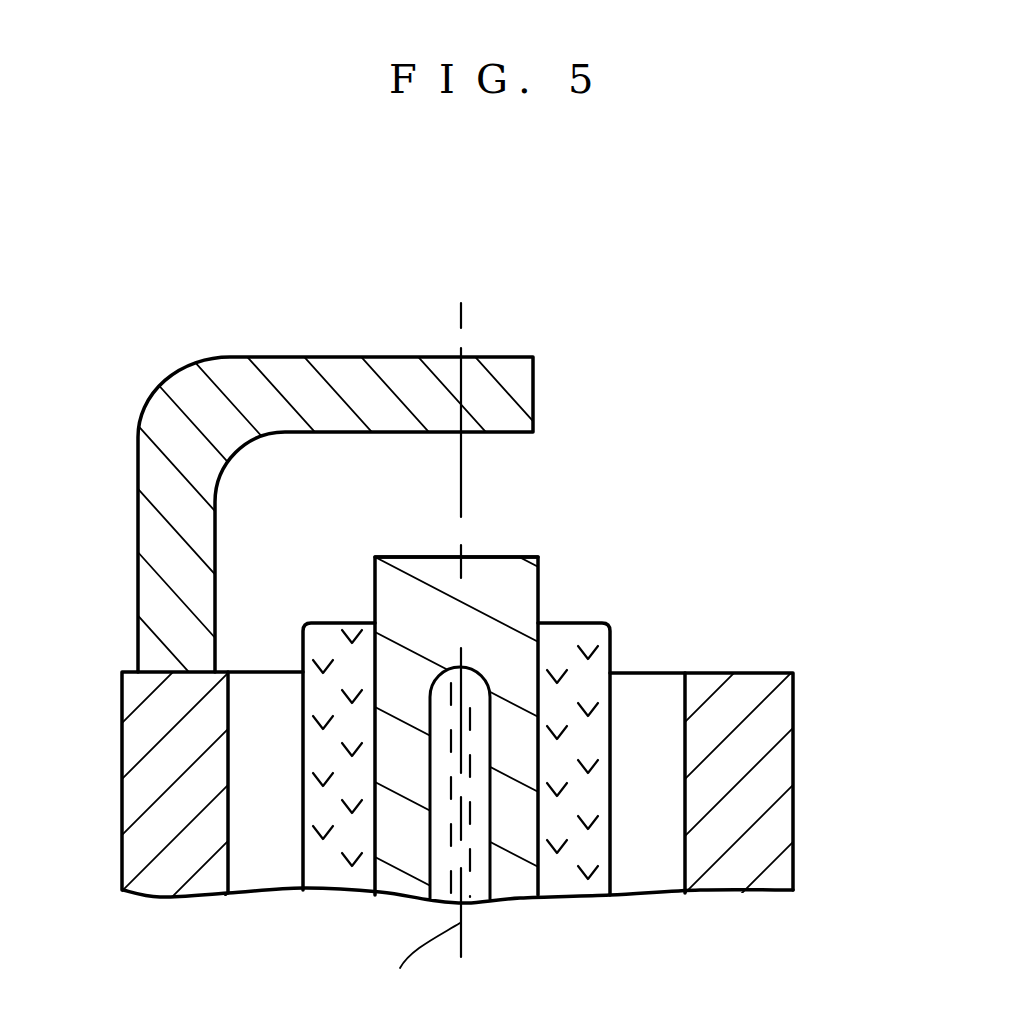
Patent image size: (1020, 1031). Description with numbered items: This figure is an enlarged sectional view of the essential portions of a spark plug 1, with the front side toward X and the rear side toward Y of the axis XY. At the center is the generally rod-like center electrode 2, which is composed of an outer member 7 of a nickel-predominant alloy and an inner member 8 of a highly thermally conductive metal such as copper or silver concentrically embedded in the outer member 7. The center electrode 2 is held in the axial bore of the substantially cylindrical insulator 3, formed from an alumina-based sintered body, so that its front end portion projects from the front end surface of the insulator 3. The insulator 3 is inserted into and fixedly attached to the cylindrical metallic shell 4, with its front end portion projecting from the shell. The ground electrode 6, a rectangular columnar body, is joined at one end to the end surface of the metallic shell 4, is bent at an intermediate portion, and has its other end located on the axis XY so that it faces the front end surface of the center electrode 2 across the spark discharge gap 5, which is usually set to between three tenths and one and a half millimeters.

The spark plug 1 is at (627, 305).
The center electrode 2 is at (553, 557).
The insulator 3 is at (595, 640).
The metallic shell 4 is at (775, 717).
The spark discharge gap 5 is at (480, 503).
The ground electrode 6 is at (210, 397).
The outer member 7 is at (420, 610).
The inner member 8 is at (440, 767).